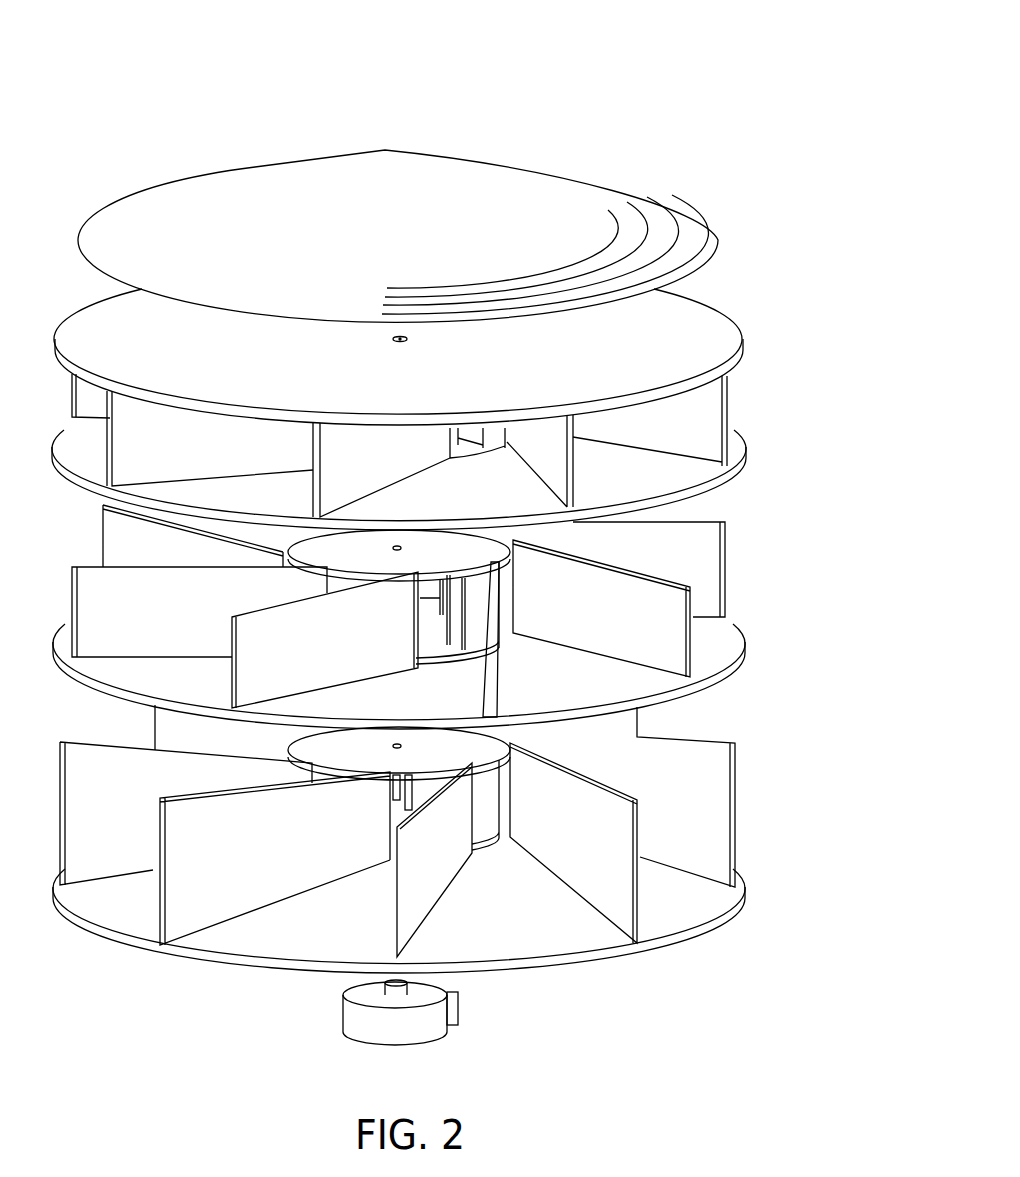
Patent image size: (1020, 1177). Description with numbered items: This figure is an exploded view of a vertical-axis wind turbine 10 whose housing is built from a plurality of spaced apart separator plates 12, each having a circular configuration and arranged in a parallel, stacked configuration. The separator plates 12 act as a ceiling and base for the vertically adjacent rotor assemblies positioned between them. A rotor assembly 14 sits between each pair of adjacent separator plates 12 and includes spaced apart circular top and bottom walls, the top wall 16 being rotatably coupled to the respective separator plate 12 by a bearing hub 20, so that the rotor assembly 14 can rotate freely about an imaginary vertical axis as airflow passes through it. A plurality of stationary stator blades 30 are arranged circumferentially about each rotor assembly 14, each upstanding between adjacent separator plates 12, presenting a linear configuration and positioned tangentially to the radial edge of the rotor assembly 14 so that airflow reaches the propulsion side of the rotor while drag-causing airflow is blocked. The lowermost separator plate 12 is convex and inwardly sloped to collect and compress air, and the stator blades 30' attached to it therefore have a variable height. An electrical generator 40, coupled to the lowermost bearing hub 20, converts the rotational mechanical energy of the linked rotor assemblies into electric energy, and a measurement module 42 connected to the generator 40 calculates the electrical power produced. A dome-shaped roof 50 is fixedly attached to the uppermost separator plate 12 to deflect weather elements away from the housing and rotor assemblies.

The vertical-axis wind turbine 10 is at (687, 113).
The separator plate 12 is at (705, 343).
The rotor assembly 14 is at (466, 448).
The top wall 16 is at (353, 562).
The bearing hub 20 is at (402, 548).
The stator blade 30 is at (399, 545).
The stator blade 30' is at (397, 831).
The electrical generator 40 is at (352, 1022).
The measurement module 42 is at (459, 1014).
The roof 50 is at (412, 173).